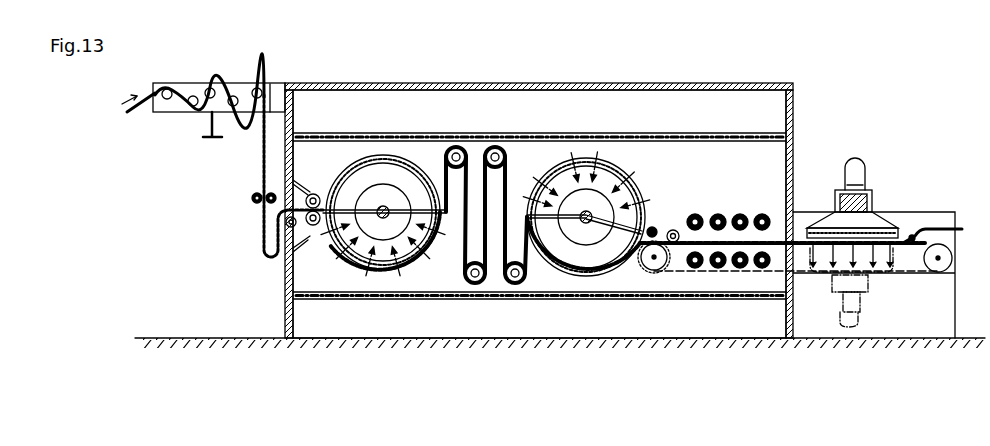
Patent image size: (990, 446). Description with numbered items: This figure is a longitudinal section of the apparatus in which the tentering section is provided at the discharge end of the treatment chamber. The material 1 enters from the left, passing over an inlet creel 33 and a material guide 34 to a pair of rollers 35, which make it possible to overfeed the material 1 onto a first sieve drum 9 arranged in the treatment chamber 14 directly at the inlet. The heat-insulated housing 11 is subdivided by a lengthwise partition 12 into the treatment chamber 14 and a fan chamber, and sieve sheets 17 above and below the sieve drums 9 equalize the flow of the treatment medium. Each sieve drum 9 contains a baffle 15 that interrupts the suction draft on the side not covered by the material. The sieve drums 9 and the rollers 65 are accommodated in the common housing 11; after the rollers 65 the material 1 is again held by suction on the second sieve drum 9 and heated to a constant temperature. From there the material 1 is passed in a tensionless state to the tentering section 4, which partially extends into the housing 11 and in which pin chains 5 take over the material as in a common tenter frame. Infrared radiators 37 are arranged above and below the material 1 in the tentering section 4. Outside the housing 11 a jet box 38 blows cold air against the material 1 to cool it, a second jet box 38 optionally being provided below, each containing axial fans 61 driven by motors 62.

The material 1 is at (153, 95).
The inlet creel 33 is at (238, 88).
The sieve sheets 17 is at (377, 133).
The heat-insulated housing 11 is at (436, 85).
The lengthwise partition 12 is at (530, 150).
The rollers 65 is at (490, 150).
The pair of rollers 35 is at (314, 192).
The material guide 34 is at (250, 199).
The baffle 15 is at (384, 164).
The sieve drum 9 is at (380, 273).
The treatment chamber 14 is at (297, 262).
The infrared radiators 37 is at (737, 213).
The pin chains 5 is at (583, 272).
The tentering section 4 is at (802, 262).
The motors 62 is at (863, 175).
The axial fans 61 is at (868, 208).
The jet box 38 is at (902, 223).